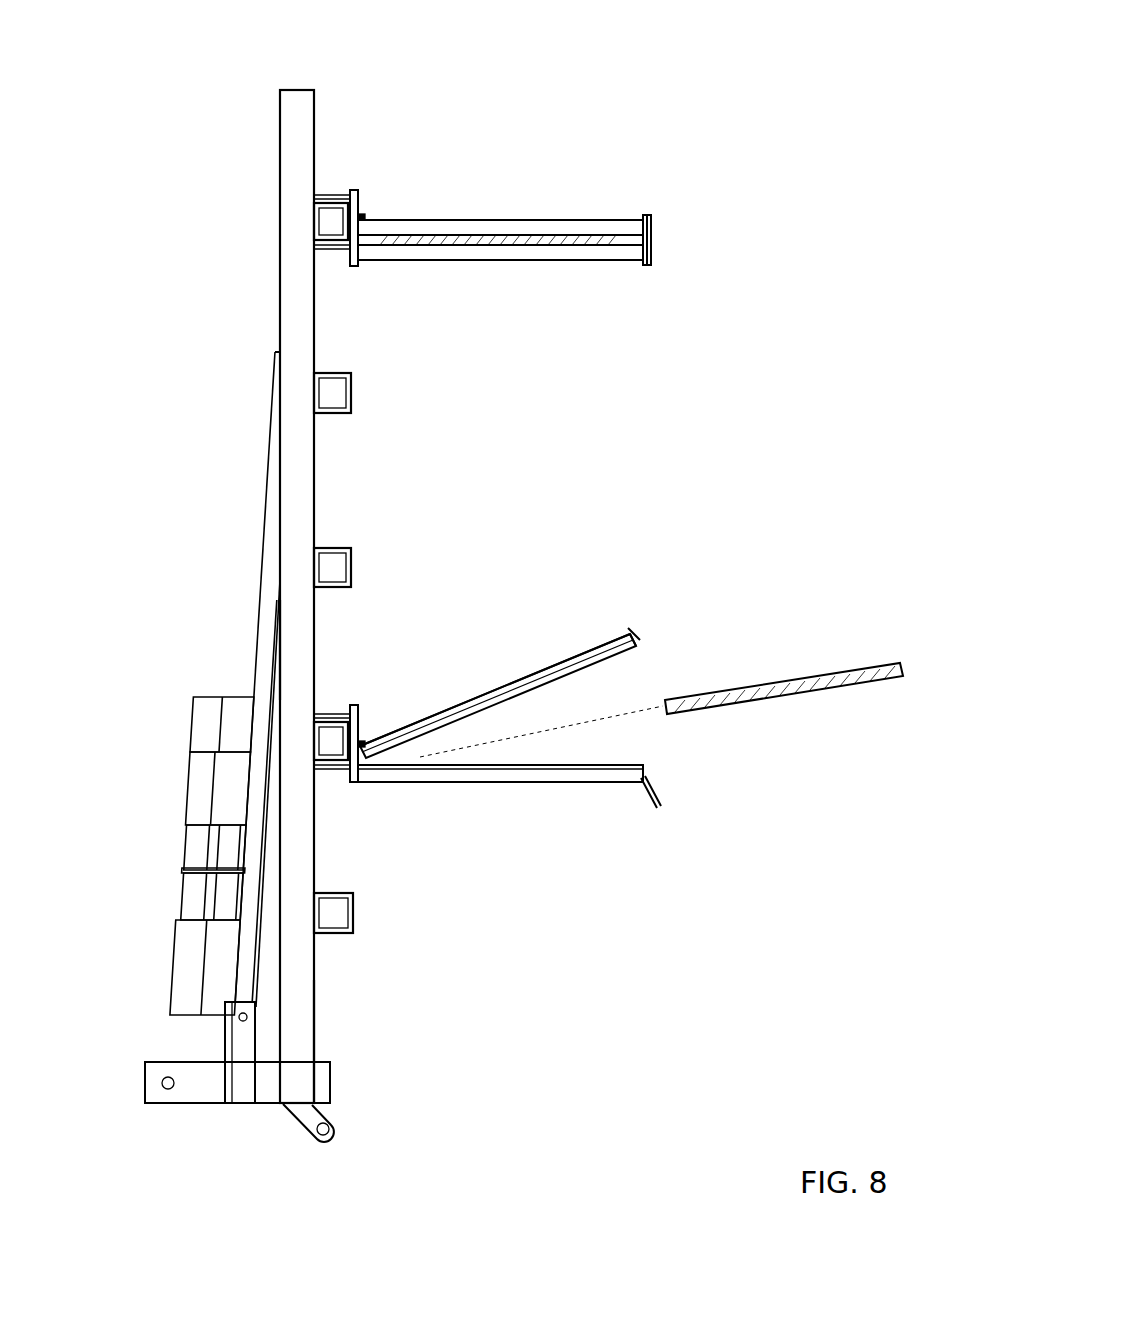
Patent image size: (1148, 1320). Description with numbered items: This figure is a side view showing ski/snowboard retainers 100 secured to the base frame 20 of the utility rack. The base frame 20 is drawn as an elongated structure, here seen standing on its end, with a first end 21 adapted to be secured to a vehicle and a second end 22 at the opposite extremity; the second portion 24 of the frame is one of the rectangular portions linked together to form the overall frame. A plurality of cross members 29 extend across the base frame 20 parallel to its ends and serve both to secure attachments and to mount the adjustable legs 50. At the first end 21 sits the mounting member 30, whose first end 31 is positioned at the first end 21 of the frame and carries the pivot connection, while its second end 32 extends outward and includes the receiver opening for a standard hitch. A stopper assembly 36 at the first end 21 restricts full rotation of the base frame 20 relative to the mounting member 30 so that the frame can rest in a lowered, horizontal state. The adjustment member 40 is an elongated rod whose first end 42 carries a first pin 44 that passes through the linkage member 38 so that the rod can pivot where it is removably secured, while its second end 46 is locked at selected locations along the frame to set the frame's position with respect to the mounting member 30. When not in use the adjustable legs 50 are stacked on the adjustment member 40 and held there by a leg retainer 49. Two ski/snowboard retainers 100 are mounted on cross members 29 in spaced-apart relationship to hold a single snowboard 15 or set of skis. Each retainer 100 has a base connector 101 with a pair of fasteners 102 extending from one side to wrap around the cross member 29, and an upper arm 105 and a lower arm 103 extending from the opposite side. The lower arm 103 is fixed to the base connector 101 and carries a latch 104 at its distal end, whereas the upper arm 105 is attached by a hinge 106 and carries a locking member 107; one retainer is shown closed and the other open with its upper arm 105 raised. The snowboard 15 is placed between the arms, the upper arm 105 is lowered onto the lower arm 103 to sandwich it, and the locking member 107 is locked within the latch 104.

The snowboard 15 is at (578, 243).
The base frame 20 is at (316, 480).
The first end 21 is at (316, 1035).
The second end 22 is at (298, 90).
The second portion 24 is at (300, 665).
The cross members 29 is at (354, 390).
The mounting member 30 is at (176, 1105).
The first end 31 is at (152, 1063).
The second end 32 is at (330, 1090).
The stopper assembly 36 is at (343, 1134).
The linkage member 38 is at (232, 1105).
The adjustment member 40 is at (255, 637).
The first end 42 is at (255, 995).
The first pin 44 is at (247, 1017).
The second end 46 is at (276, 362).
The leg retainer 49 is at (190, 868).
The adjustable legs 50 is at (193, 797).
The ski/snowboard retainer 100 is at (563, 218).
The base connector 101 is at (358, 208).
The fasteners 102 is at (338, 262).
The lower arm 103 is at (437, 262).
The latch 104 is at (653, 252).
The upper arm 105 is at (445, 222).
The hinge 106 is at (362, 215).
The locking member 107 is at (655, 222).